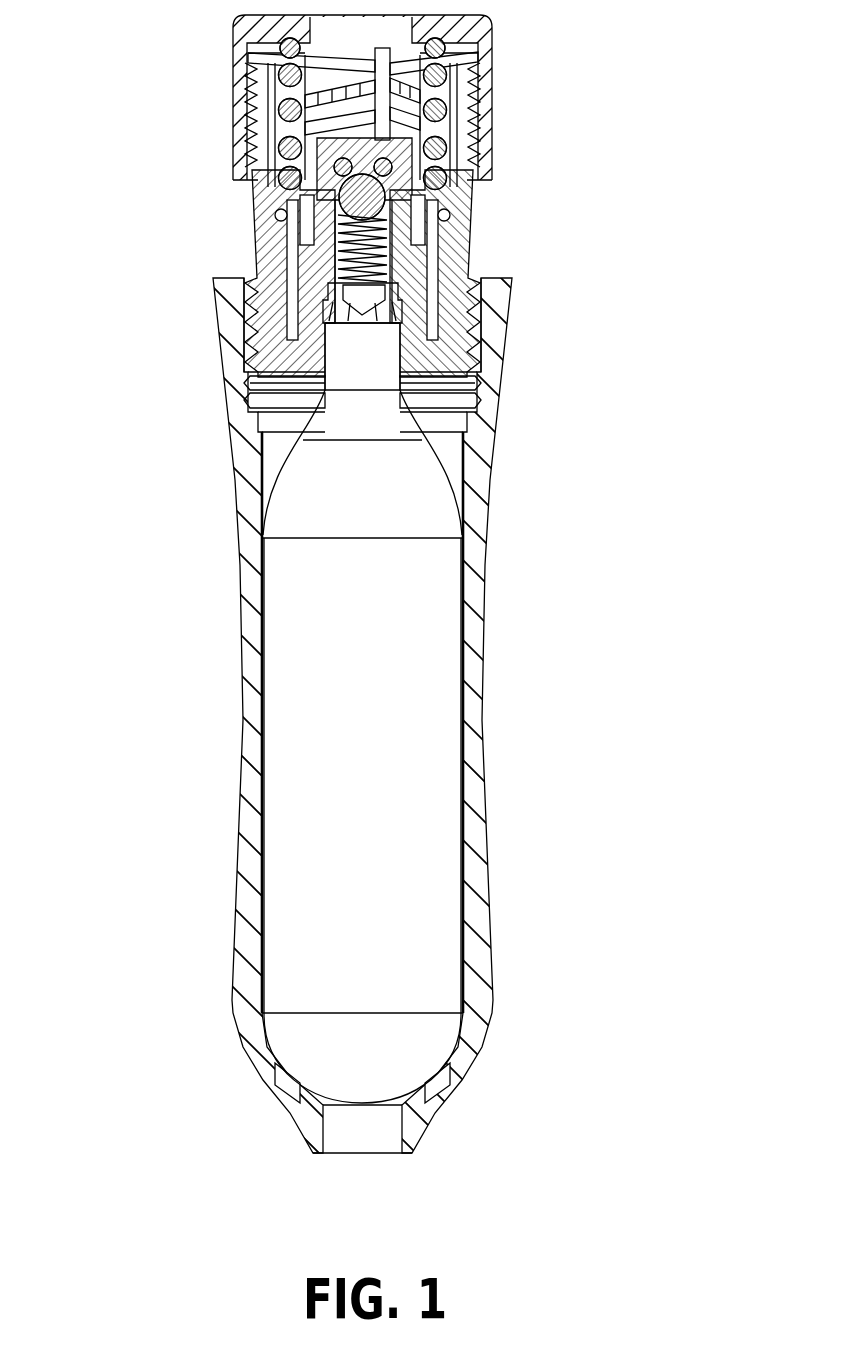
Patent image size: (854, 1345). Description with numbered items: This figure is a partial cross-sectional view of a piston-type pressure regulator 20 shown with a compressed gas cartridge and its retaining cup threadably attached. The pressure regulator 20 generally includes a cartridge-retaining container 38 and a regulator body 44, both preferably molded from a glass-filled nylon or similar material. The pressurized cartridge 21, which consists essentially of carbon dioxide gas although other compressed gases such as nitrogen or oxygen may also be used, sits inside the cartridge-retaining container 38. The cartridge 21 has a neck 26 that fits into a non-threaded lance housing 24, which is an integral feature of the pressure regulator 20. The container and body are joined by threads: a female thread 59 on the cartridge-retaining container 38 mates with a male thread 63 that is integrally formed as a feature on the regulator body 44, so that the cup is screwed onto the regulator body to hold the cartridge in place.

The pressure regulator 20 is at (537, 173).
The pressurized cartridge 21 is at (378, 951).
The lance housing 24 is at (262, 353).
The neck 26 is at (373, 358).
The cartridge-retaining container 38 is at (473, 830).
The regulator body 44 is at (468, 353).
The female thread 59 is at (247, 385).
The male thread 63 is at (252, 336).